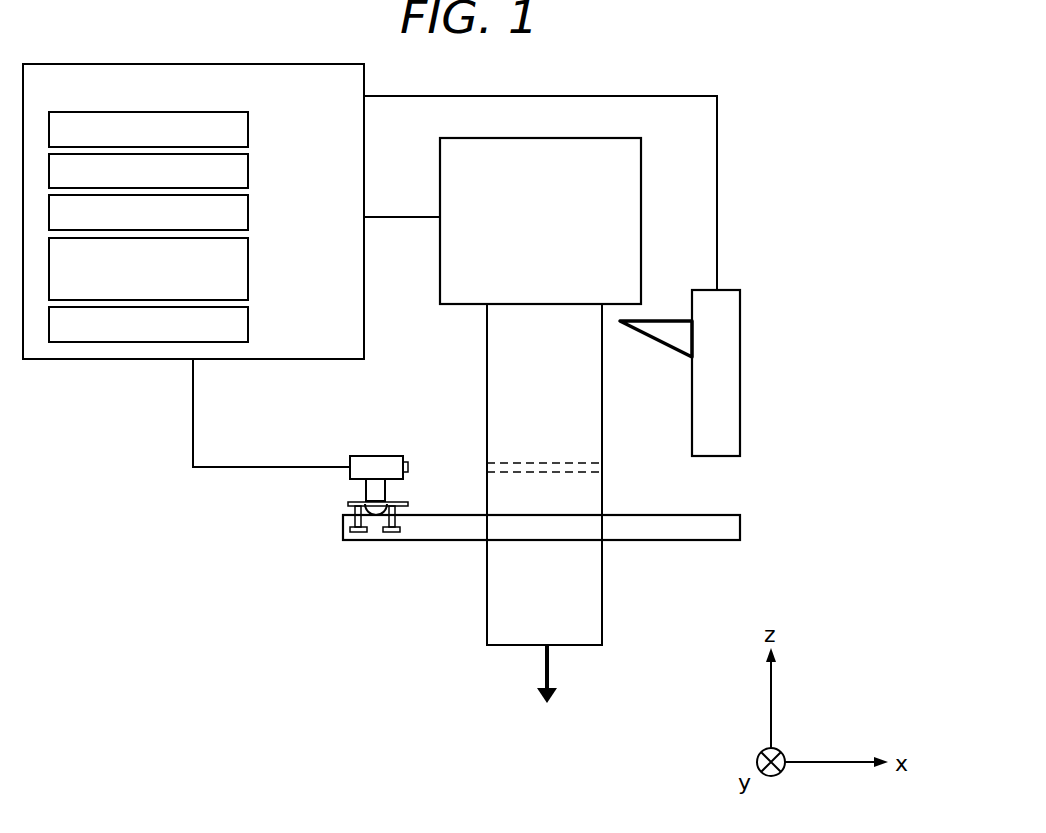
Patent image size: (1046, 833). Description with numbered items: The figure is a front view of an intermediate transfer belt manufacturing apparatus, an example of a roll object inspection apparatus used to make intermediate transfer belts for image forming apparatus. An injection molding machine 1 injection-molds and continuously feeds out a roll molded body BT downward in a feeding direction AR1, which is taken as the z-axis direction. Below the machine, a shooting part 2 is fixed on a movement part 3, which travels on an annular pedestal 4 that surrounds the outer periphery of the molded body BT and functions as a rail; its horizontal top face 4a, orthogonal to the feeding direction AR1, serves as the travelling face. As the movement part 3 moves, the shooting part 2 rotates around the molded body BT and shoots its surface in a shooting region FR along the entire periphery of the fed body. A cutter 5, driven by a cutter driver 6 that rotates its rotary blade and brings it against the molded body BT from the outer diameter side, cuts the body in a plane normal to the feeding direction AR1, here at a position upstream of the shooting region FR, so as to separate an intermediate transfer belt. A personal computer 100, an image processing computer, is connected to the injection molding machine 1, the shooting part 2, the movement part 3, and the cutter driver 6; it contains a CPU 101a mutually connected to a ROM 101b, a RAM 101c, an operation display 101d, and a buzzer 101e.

The personal computer (PC) 100 is at (254, 65).
The central processing unit (CPU) 101a is at (250, 127).
The read only memory (ROM) 101b is at (250, 169).
The random access memory (RAM) 101c is at (250, 211).
The operation display 101d is at (250, 266).
The buzzer 101e is at (250, 321).
The injection molding machine 1 is at (636, 213).
The shooting part 2 is at (373, 468).
The movement part 3 is at (348, 504).
The pedestal 4 is at (435, 530).
The top face 4a is at (707, 514).
The cutter 5 is at (666, 335).
The cutter driver 6 is at (733, 333).
The molded body BT is at (500, 327).
The shooting region FR is at (602, 465).
The feeding direction AR1 is at (551, 665).